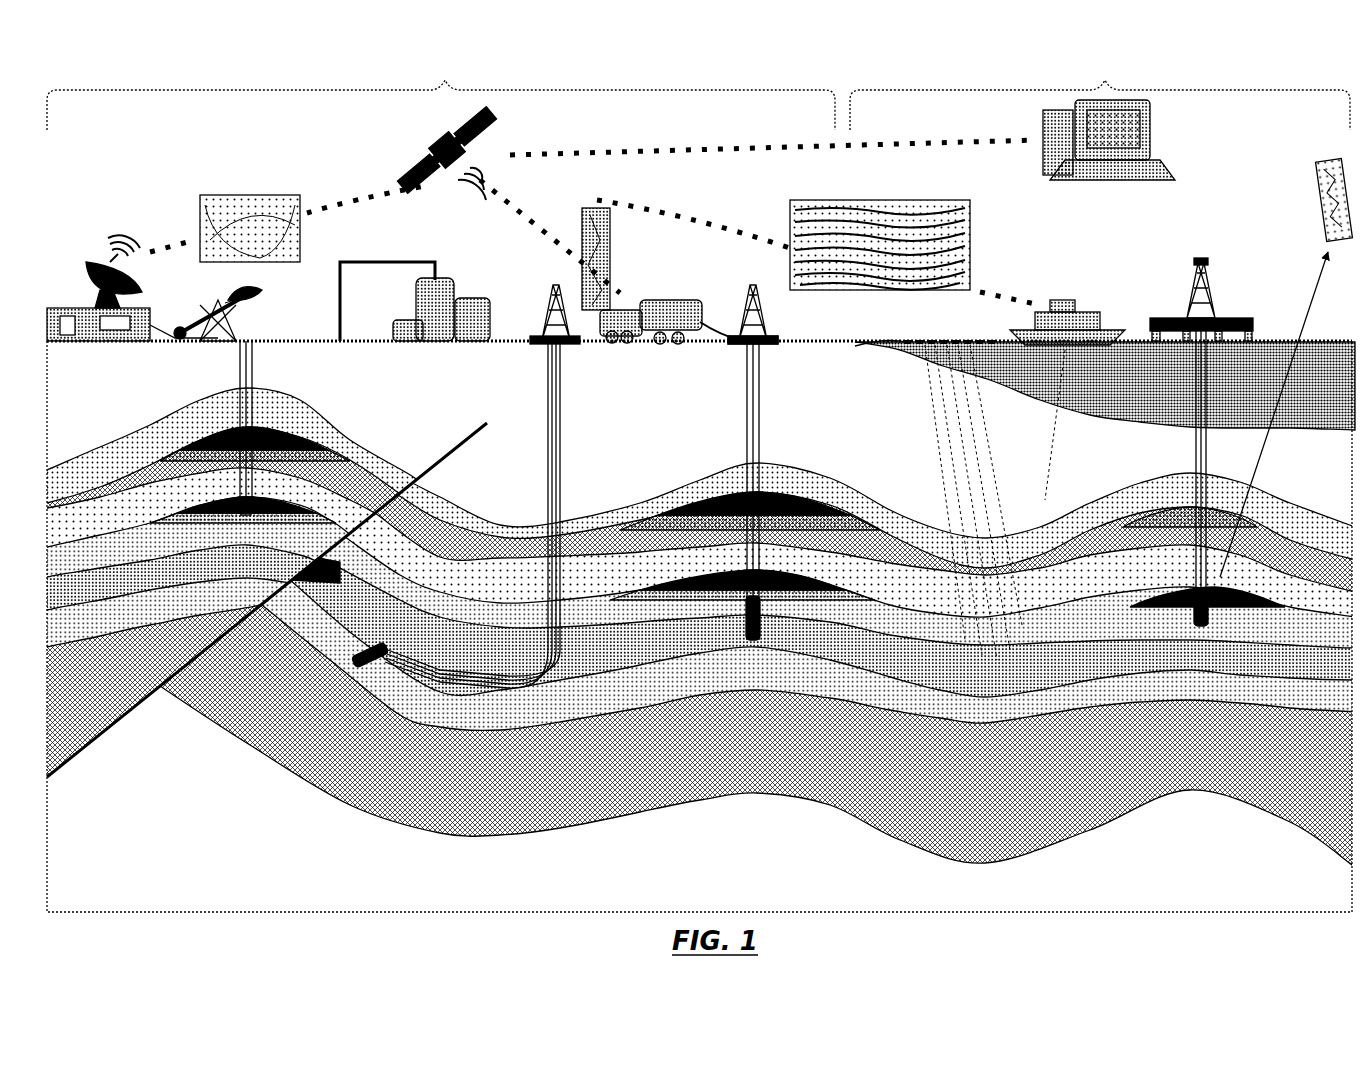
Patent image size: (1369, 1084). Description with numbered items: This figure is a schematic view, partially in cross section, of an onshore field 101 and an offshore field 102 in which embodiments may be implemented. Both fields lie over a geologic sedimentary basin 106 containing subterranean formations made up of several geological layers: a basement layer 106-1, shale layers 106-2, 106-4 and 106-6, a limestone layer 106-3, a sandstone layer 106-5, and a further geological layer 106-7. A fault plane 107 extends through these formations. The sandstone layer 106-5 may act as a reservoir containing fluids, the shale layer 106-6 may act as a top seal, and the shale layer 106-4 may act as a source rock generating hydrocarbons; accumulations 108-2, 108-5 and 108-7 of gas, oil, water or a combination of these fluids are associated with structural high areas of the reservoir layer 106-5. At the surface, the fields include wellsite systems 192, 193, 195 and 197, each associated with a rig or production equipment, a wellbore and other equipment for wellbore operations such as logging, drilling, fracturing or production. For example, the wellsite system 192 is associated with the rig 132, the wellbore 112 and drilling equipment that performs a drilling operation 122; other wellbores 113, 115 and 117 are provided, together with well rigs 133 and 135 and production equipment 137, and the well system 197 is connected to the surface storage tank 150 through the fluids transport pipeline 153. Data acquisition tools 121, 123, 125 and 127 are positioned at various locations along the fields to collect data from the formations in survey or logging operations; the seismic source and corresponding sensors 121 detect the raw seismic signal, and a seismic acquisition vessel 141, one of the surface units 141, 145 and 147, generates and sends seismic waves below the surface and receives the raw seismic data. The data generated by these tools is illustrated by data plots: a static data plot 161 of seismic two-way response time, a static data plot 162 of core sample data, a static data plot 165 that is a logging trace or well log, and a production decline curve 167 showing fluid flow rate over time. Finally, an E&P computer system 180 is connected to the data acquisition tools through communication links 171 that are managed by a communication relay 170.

The onshore field 101 is at (441, 88).
The offshore field 102 is at (1100, 88).
The geologic sedimentary basin 106 is at (684, 712).
The basement layer 106-1 is at (684, 844).
The shale layer 106-2 is at (684, 831).
The limestone layer 106-3 is at (684, 814).
The shale layer 106-4 is at (684, 790).
The sandstone layer 106-5 is at (684, 776).
The shale layer 106-6 is at (684, 755).
The formation layer 106-7 is at (684, 736).
The fault plane 107 is at (452, 447).
The accumulation 108-2 is at (1177, 507).
The accumulation 108-5 is at (783, 493).
The accumulation 108-7 is at (303, 430).
The wellbore 112 is at (1193, 441).
The wellbore 113 is at (566, 389).
The wellbore 115 is at (766, 395).
The wellbore 117 is at (260, 367).
The seismic source and corresponding sensors 121 is at (962, 338).
The drilling operation 122 is at (1211, 451).
The data acquisition tool 123 is at (355, 662).
The data acquisition tool 125 is at (751, 645).
The data acquisition tool 127 is at (233, 495).
The rig 132 is at (1215, 292).
The well rig 133 is at (545, 300).
The well rig 135 is at (770, 318).
The production equipment 137 is at (252, 300).
The seismic acquisition vessel 141 is at (1080, 310).
The surface unit 145 is at (648, 298).
The surface unit 147 is at (63, 285).
The surface storage tank 150 is at (448, 283).
The fluids transport pipeline 153 is at (362, 256).
The static data plot 161 is at (915, 200).
The static data plot 162 is at (1317, 180).
The static data plot 165 is at (603, 212).
The production decline curve 167 is at (237, 195).
The communication relay 170 is at (430, 138).
The communication links 171 is at (742, 143).
The E&P computer system 180 is at (1162, 142).
The wellsite system 192 is at (1202, 272).
The wellsite system 193 is at (550, 236).
The wellsite system 195 is at (753, 301).
The wellsite system 197 is at (206, 302).